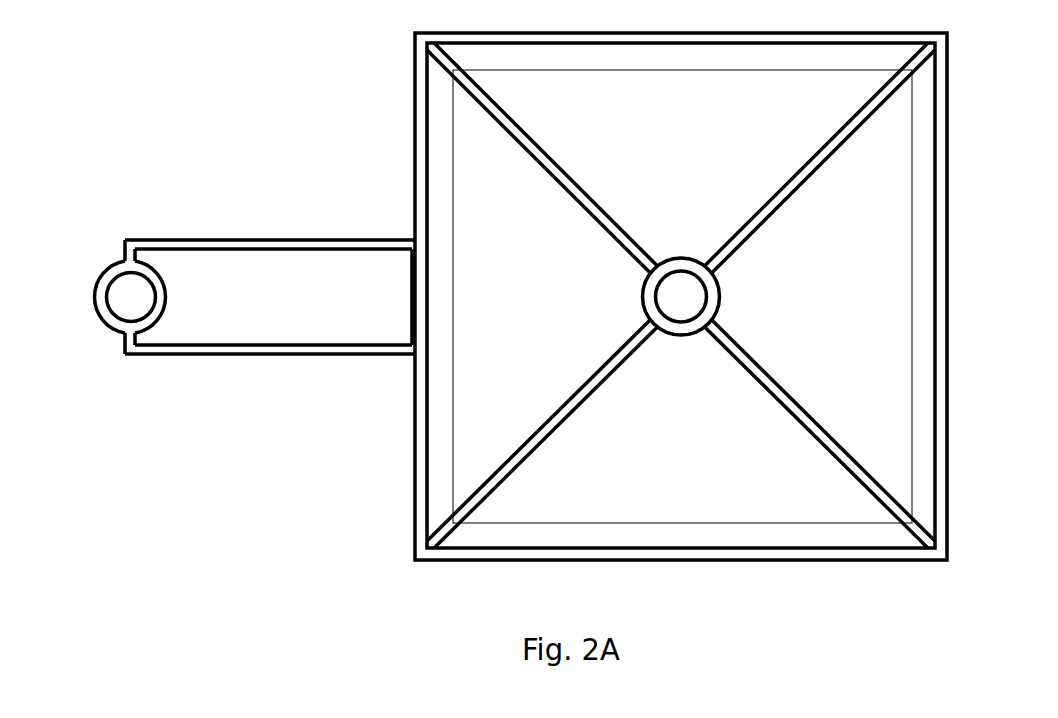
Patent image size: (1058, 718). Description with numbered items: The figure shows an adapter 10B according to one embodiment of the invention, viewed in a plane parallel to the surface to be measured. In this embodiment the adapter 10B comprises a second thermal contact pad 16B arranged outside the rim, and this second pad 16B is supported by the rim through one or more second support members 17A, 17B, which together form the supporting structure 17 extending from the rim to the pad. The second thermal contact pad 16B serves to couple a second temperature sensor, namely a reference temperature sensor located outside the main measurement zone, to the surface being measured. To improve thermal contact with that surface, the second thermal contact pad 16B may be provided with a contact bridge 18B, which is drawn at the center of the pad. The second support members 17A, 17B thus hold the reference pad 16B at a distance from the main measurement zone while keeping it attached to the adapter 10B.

The paddle head 10B is at (368, 32).
The handle 17 is at (150, 195).
The second support member 17A is at (225, 246).
The second support member 17B is at (252, 350).
The second thermal contact pad 16B is at (93, 293).
The contact bridge 18B is at (127, 313).